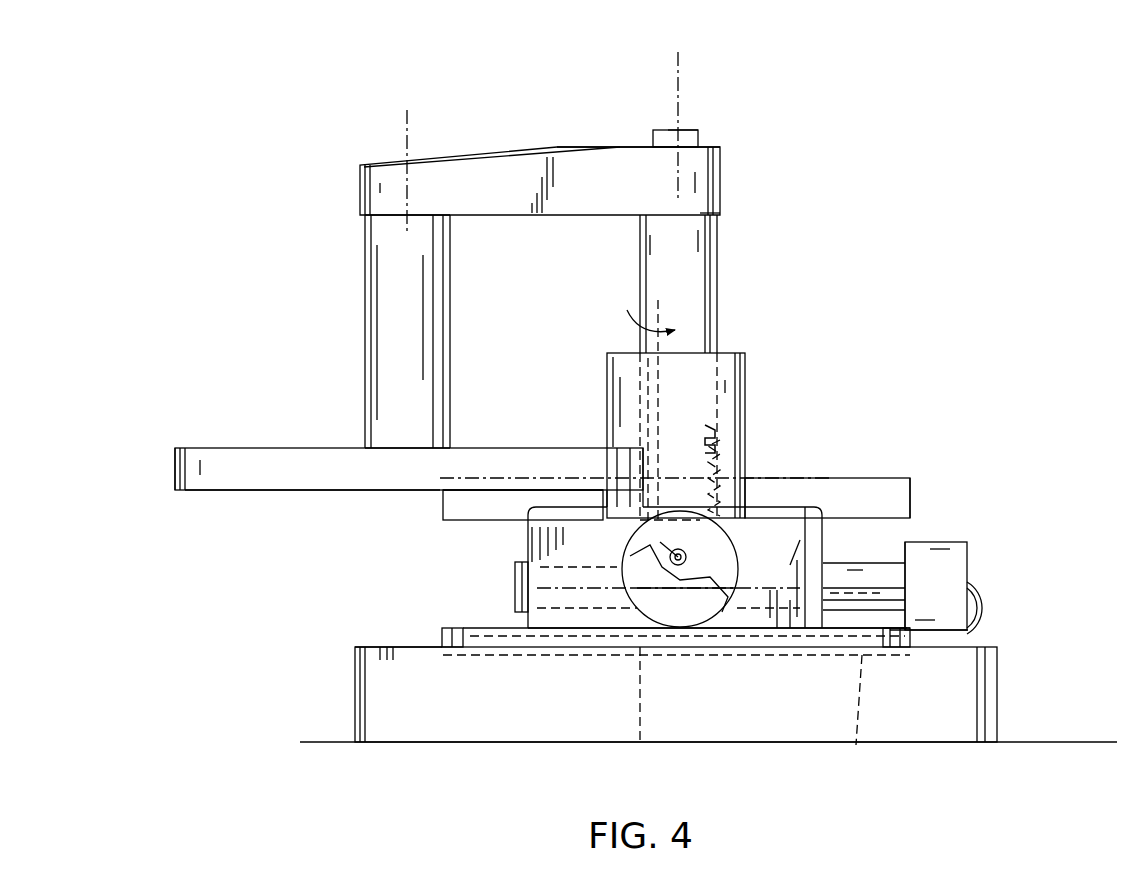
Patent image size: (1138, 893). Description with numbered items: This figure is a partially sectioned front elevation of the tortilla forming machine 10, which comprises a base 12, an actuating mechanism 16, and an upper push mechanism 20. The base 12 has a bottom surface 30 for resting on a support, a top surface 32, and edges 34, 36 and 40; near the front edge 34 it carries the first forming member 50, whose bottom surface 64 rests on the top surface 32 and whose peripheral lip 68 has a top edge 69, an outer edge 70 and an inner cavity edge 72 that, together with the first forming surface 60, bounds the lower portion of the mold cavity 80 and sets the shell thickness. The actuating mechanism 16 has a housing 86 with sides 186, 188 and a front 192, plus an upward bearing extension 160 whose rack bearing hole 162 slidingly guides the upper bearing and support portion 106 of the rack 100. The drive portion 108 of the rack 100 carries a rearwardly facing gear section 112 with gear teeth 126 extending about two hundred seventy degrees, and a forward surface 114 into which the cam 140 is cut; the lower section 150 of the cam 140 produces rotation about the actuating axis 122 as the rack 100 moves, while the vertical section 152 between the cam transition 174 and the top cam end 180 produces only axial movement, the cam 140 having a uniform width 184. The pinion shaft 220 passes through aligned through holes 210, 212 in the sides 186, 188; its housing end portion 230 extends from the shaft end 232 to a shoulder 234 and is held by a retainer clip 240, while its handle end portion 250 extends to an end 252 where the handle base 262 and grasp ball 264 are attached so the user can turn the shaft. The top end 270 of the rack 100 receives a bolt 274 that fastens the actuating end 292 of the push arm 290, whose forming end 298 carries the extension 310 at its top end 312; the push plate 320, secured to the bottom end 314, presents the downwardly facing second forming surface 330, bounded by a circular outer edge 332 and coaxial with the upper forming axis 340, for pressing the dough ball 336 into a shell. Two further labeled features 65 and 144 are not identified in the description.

The tortilla forming machine 10 is at (893, 330).
The base 12 is at (355, 672).
The actuating mechanism 16 is at (778, 407).
The upper push mechanism 20 is at (754, 117).
The bottom surface 30 is at (373, 743).
The top surface 32 is at (372, 647).
The edge 34 is at (917, 743).
The edge 36 is at (998, 705).
The edge 40 is at (355, 705).
The first forming member 50 is at (460, 642).
The first forming surface 60 is at (483, 633).
The bottom surface 64 is at (560, 642).
The bore 65 is at (855, 719).
The peripheral lip 68 is at (463, 627).
The top edge 69 is at (452, 627).
The outer edge 70 is at (527, 629).
The inner cavity edge 72 is at (885, 632).
The mold cavity 80 is at (577, 632).
The housing 86 is at (824, 564).
The rack 100 is at (750, 382).
The upper bearing and support portion 106 is at (707, 252).
The drive portion 108 is at (720, 465).
The gear section 112 is at (728, 440).
The forward surface 114 is at (653, 397).
The actuating axis 122 is at (683, 60).
The gear teeth 126 is at (657, 464).
The cam 140 is at (652, 418).
The bearing 144 is at (720, 548).
The lower section 150 is at (640, 615).
The vertical section 152 is at (634, 440).
The upward bearing extension 160 is at (614, 366).
The rack bearing hole 162 is at (745, 345).
The cam transition 174 is at (738, 490).
The top cam end 180 is at (640, 413).
The width 184 is at (690, 465).
The side 186 is at (523, 470).
The side 188 is at (908, 573).
The front 192 is at (763, 615).
The through hole 210 is at (527, 518).
The through hole 212 is at (805, 532).
The pinion shaft 220 is at (580, 580).
The housing end portion 230 is at (517, 637).
The shaft end 232 is at (523, 505).
The shoulder 234 is at (823, 600).
The retainer clip 240 is at (515, 600).
The handle end portion 250 is at (907, 543).
The end 252 is at (952, 577).
The handle base 262 is at (962, 573).
The grasp ball 264 is at (982, 597).
The top end 270 is at (675, 213).
The bolt 274 is at (668, 131).
The push arm 290 is at (574, 178).
The actuating end 292 is at (697, 158).
The forming end 298 is at (397, 178).
The extension 310 is at (393, 267).
The top end 312 is at (373, 220).
The bottom end 314 is at (382, 448).
The push plate 320 is at (210, 446).
The second forming surface 330 is at (268, 491).
The circular outer edge 332 is at (176, 458).
The dough ball 336 is at (700, 612).
The upper forming axis 340 is at (408, 128).